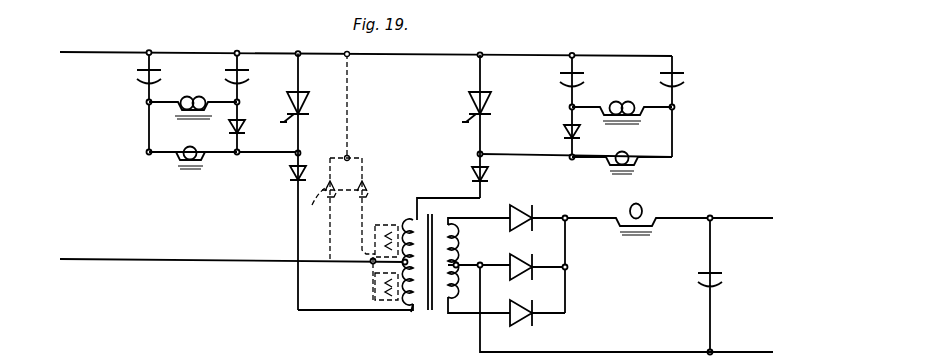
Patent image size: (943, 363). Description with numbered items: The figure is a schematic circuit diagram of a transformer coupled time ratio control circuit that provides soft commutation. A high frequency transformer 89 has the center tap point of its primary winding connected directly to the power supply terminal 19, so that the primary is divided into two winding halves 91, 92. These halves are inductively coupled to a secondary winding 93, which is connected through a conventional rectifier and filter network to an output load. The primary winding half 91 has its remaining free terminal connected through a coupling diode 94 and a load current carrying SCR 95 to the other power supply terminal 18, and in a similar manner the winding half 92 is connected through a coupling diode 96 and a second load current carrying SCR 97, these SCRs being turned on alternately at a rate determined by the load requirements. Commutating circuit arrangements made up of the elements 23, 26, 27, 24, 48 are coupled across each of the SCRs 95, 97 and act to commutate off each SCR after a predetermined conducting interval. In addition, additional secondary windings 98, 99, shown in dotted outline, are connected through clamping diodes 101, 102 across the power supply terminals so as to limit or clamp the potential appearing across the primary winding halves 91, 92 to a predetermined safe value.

The power supply terminal 18 is at (109, 51).
The power supply terminal 19 is at (158, 261).
The commutating circuit element 23 is at (139, 83).
The commutating circuit element 24 is at (243, 129).
The commutating circuit element 26 is at (192, 95).
The commutating circuit element 27 is at (243, 72).
The commutating circuit element 48 is at (189, 146).
The high frequency transformer 89 is at (404, 268).
The primary winding half 91 is at (413, 308).
The primary winding half 92 is at (412, 220).
The secondary winding 93 is at (466, 246).
The coupling diode 94 is at (294, 176).
The load current carrying SCR 95 is at (306, 99).
The coupling diode 96 is at (488, 177).
The second load current carrying SCR 97 is at (488, 100).
The additional secondary winding 98 is at (375, 238).
The additional secondary winding 99 is at (375, 290).
The clamping diode 101 is at (372, 194).
The clamping diode 102 is at (313, 201).